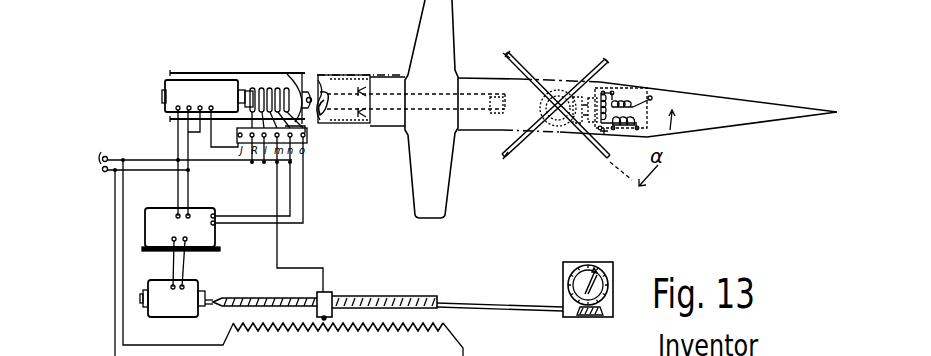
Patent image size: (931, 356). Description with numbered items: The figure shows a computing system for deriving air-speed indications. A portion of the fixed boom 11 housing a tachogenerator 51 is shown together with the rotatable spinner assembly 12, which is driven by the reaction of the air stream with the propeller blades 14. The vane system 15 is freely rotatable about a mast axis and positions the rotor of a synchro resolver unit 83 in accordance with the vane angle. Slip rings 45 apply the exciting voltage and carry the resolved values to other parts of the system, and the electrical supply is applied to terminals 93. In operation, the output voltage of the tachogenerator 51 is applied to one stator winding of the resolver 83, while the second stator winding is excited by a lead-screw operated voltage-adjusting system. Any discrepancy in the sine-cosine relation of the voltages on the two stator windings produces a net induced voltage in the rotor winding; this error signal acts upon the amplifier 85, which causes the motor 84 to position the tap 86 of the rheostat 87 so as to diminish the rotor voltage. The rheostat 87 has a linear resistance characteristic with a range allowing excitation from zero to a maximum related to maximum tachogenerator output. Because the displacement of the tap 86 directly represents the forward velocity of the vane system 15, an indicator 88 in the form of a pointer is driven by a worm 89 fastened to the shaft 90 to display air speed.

The fixed boom 11 is at (184, 73).
The rotatable spinner assembly 12 is at (496, 134).
The propeller blades 14 is at (450, 173).
The vane system 15 is at (542, 84).
The slip rings 45 is at (264, 86).
The tachogenerator 51 is at (165, 84).
The synchro resolver unit 83 is at (632, 96).
The motor 84 is at (146, 283).
The amplifier 85 is at (146, 213).
The tap 86 is at (335, 292).
The rheostat 87 is at (453, 330).
The indicator 88 is at (564, 280).
The worm 89 is at (593, 315).
The shaft 90 is at (527, 310).
The terminals 93 is at (195, 151).